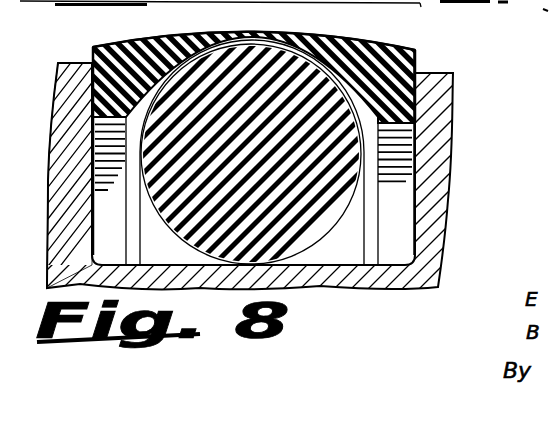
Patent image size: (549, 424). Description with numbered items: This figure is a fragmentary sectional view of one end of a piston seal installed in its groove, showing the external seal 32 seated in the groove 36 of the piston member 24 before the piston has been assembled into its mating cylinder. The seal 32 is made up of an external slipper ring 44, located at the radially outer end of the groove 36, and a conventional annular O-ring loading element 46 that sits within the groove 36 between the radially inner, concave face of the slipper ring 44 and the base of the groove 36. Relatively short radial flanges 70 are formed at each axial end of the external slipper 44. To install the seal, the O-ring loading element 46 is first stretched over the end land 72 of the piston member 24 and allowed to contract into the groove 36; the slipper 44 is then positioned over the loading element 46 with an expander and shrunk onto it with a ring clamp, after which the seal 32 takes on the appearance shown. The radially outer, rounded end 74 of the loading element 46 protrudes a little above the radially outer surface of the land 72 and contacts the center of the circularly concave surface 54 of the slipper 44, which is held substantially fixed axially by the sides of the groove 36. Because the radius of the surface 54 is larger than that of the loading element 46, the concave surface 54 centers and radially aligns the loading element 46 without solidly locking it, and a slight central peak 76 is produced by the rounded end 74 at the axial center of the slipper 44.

The piston member 24 is at (442, 217).
The external seal 32 is at (466, 78).
The groove 36 is at (415, 173).
The external slipper ring 44 is at (417, 50).
The O-ring loading element 46 is at (415, 132).
The circularly concave surface 54 is at (349, 88).
The radial flanges 70 is at (90, 108).
The end land 72 is at (68, 63).
The rounded end 74 is at (288, 38).
The central peak 76 is at (257, 33).